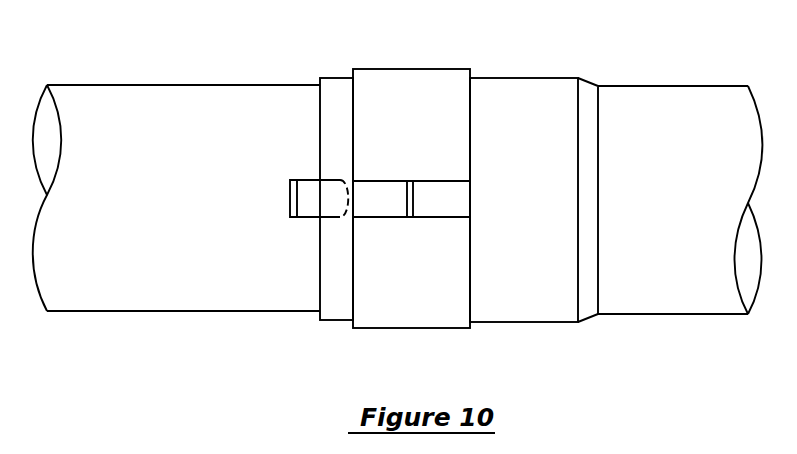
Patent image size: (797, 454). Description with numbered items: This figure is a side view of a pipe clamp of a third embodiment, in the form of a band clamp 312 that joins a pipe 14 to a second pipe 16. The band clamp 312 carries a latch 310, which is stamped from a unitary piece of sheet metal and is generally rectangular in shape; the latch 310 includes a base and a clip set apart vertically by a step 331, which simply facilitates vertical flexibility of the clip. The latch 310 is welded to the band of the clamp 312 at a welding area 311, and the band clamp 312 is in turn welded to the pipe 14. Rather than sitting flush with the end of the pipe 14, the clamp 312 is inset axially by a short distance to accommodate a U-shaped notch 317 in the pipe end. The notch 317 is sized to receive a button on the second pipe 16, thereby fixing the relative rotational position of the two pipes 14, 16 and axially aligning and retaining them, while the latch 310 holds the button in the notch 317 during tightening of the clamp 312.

The second pipe 16 is at (141, 116).
The pipe 14 is at (690, 117).
The band clamp 312 is at (438, 92).
The welding area 311 is at (443, 207).
The latch 310 is at (365, 232).
The notch 317 is at (301, 230).
The step 331 is at (412, 212).